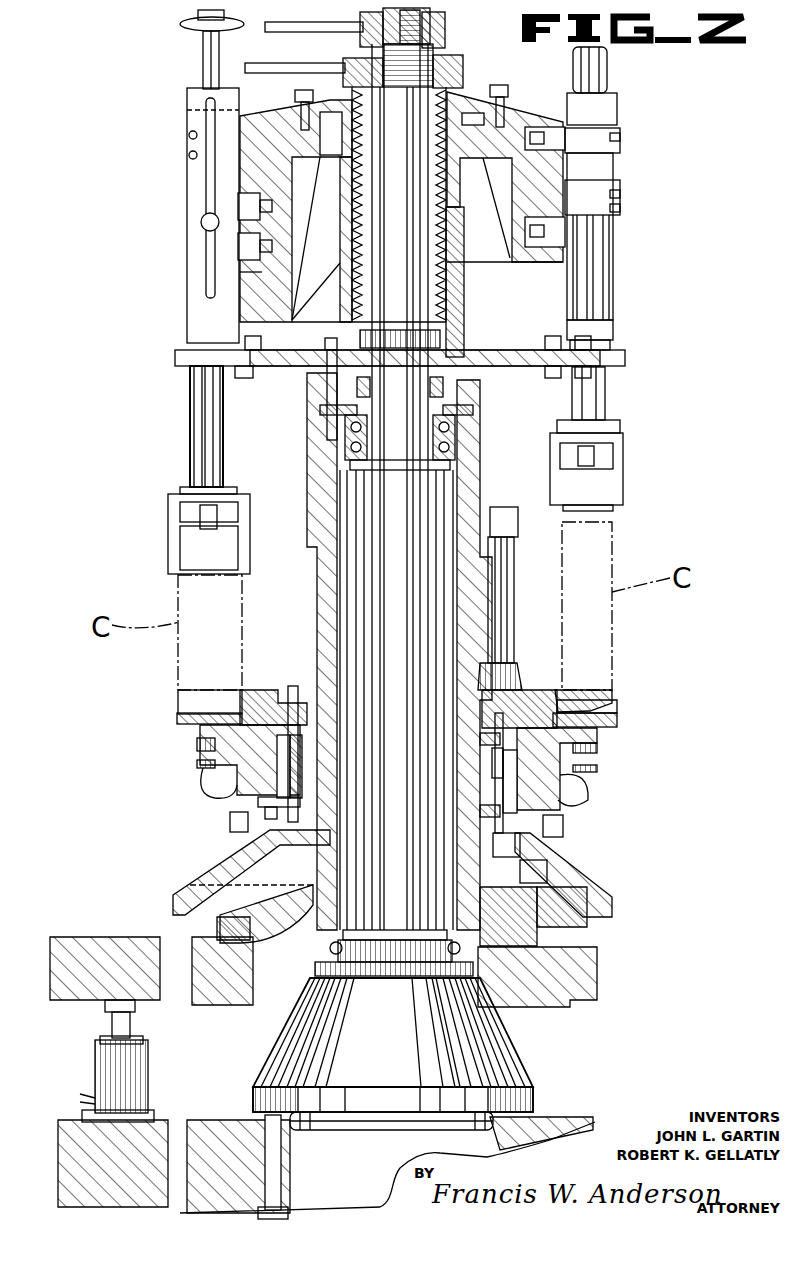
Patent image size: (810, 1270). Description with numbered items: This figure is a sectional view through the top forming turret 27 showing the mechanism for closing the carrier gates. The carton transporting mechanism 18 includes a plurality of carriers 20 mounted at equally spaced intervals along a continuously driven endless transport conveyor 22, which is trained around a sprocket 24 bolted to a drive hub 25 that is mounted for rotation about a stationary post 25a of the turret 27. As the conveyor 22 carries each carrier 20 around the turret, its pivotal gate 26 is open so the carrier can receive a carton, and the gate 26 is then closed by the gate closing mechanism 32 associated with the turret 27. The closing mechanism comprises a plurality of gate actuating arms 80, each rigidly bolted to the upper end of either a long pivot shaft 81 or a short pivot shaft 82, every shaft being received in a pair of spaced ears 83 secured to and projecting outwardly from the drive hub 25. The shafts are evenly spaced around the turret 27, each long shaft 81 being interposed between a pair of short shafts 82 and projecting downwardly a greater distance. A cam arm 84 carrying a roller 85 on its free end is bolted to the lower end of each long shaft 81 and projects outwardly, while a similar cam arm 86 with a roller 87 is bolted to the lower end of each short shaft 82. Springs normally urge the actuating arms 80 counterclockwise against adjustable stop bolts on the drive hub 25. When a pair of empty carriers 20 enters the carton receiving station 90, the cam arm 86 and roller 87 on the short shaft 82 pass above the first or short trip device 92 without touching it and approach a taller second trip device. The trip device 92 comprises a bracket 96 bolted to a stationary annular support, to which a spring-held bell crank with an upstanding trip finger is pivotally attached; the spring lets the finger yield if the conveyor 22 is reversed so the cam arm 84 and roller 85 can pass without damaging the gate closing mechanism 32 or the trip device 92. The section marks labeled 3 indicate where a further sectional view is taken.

The section line 3 is at (420, 815).
The carton transporting mechanism 18 is at (646, 655).
The carrier 20 is at (622, 722).
The transport conveyor 22 is at (194, 746).
The sprocket 24 is at (215, 758).
The drive hub 25 is at (480, 727).
The stationary post 25a is at (425, 648).
The gate 26 is at (610, 700).
The top forming turret 27 is at (646, 130).
The gate closing mechanism 32 is at (488, 778).
The gate actuating arm 80 is at (257, 692).
The long pivot shaft 81 is at (490, 760).
The short pivot shaft 82 is at (478, 748).
The ears 83 is at (480, 738).
The cam arm 84 is at (245, 828).
The roller 85 is at (262, 838).
The cam arm 86 is at (565, 814).
The roller 87 is at (520, 849).
The carton receiving station 90 is at (641, 530).
The short trip device 92 is at (528, 862).
The bracket 96 is at (530, 900).